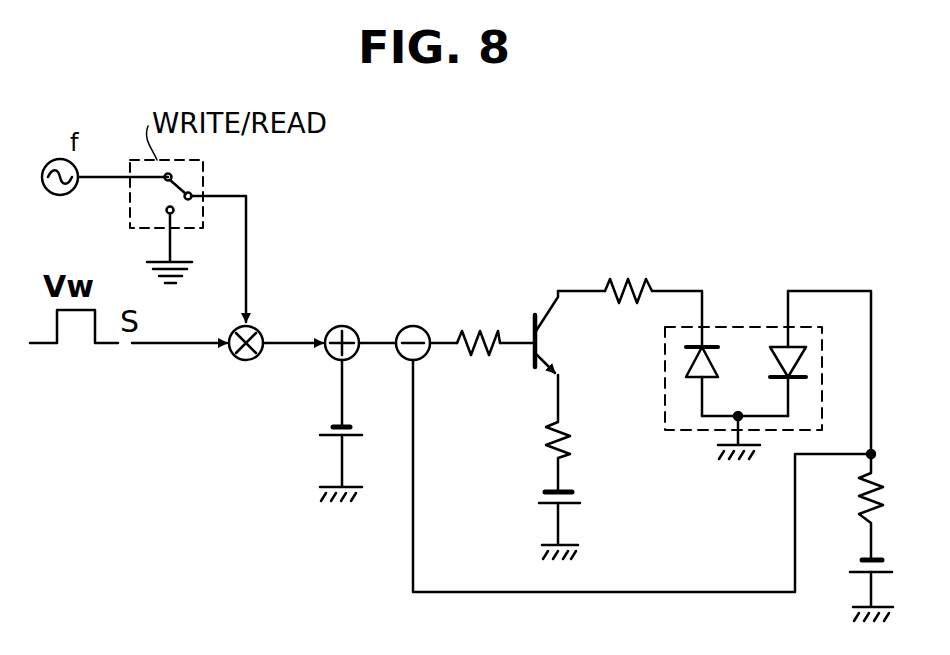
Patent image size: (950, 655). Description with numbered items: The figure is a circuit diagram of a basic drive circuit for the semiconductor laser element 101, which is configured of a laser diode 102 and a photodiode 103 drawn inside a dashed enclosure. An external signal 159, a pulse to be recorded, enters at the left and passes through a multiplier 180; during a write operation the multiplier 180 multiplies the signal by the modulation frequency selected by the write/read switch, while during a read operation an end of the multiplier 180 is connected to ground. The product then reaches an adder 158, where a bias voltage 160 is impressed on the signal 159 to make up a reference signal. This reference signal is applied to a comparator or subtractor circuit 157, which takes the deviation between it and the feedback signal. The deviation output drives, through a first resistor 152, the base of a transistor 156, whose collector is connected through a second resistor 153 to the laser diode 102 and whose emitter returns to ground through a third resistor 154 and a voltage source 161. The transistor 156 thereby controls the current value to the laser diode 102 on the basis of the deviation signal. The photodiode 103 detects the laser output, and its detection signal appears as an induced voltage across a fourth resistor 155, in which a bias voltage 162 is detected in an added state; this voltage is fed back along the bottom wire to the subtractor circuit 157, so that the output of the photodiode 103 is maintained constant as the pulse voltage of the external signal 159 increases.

The semiconductor laser element 101 is at (697, 432).
The laser diode 102 is at (720, 356).
The photodiode 103 is at (800, 345).
The resistor R1 152 is at (497, 335).
The resistor R2 153 is at (611, 288).
The resistor R3 154 is at (565, 428).
The resistor R4 155 is at (862, 502).
The transistor 156 is at (561, 268).
The subtractor circuit 157 is at (413, 325).
The adder 158 is at (342, 325).
The external signal 159 is at (181, 345).
The bias voltage 160 is at (334, 424).
The voltage source 161 is at (548, 491).
The bias voltage 162 is at (858, 562).
The multiplier 180 is at (247, 361).